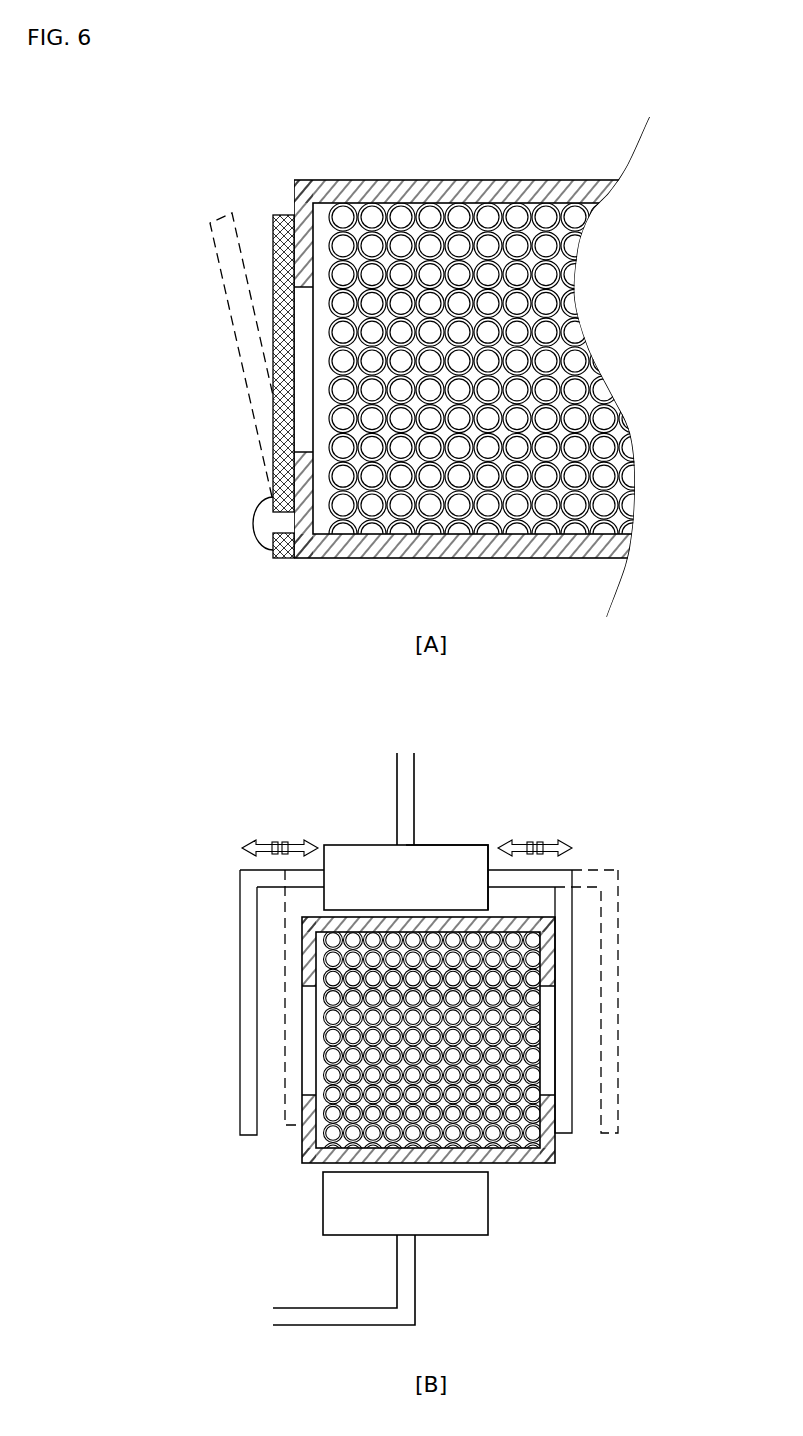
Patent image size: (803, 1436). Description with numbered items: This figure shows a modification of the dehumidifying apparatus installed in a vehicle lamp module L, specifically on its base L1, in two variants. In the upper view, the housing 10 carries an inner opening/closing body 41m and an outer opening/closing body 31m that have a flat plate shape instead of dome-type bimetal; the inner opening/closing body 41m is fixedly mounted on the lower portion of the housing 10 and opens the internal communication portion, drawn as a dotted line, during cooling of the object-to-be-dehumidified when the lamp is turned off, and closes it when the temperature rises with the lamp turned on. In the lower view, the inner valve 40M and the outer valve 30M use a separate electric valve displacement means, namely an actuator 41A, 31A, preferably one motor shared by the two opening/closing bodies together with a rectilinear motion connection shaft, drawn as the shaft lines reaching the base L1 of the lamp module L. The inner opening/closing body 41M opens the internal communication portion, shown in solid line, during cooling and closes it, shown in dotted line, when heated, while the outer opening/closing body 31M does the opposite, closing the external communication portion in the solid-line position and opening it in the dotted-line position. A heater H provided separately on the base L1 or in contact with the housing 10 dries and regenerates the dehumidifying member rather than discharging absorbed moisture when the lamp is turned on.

The housing 10 is at (448, 168).
The inner opening/closing body 41m is at (277, 215).
The outer opening/closing body 31m is at (215, 223).
The actuator 41A is at (355, 845).
The actuator 31A is at (488, 845).
The base L1 is at (414, 775).
The vehicle lamp module L is at (344, 1280).
The heater H is at (488, 1203).
The inner valve 40M is at (232, 984).
The inner opening/closing body 41M is at (298, 1137).
The outer valve 30M is at (580, 861).
The outer opening/closing body 31M is at (575, 990).